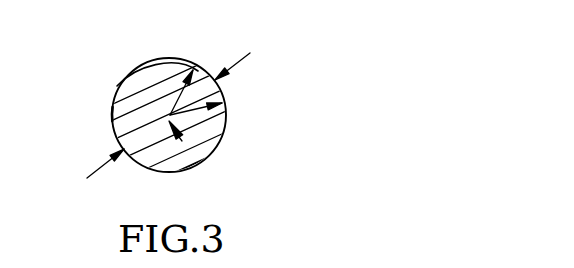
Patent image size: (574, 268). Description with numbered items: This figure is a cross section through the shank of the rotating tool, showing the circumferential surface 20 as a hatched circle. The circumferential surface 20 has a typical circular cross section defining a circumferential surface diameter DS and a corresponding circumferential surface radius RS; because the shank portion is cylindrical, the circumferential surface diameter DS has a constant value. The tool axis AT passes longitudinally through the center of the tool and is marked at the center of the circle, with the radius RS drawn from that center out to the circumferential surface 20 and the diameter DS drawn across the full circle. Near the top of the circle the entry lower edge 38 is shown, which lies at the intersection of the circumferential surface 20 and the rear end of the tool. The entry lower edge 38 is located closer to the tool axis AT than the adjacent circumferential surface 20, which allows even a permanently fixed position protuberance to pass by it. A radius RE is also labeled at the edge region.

The circumferential surface 20 is at (227, 107).
The entry lower edge 38 is at (194, 64).
The edge radius RE is at (179, 97).
The circumferential surface radius RS is at (190, 111).
The circumferential surface diameter DS is at (98, 170).
The tool axis AT is at (182, 141).